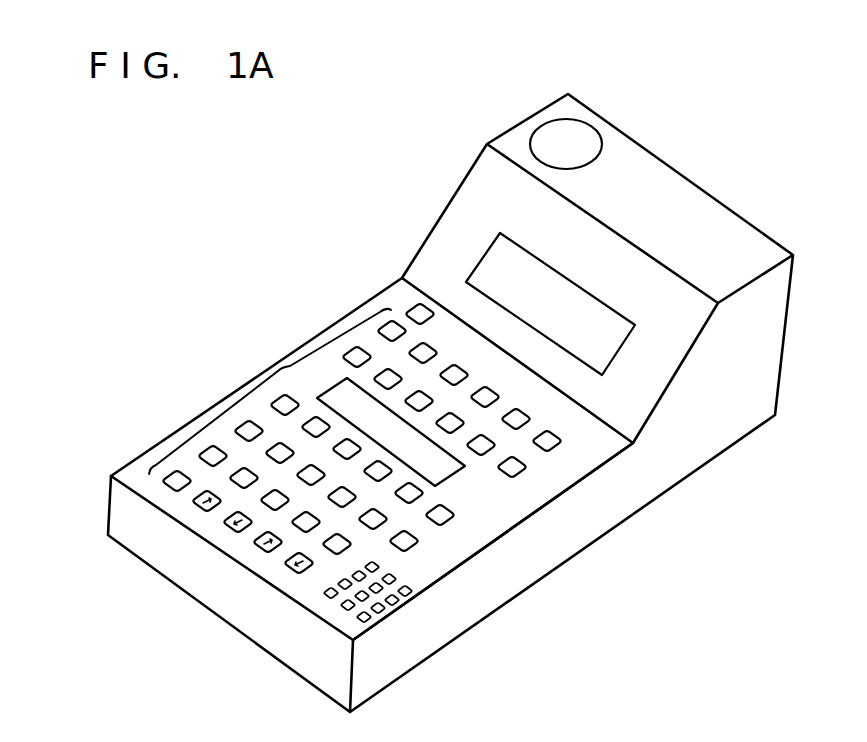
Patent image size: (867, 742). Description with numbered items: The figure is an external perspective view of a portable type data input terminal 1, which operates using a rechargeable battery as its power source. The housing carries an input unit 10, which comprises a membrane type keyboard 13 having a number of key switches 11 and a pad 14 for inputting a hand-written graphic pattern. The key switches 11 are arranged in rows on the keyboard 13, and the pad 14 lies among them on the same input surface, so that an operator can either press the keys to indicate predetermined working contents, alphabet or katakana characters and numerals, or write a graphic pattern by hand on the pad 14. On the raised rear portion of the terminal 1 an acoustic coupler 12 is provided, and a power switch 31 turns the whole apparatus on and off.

The portable type data input terminal 1 is at (154, 373).
The input unit 10 is at (144, 462).
The key switches 11 is at (390, 322).
The acoustic coupler 12 is at (588, 137).
The keyboard 13 is at (270, 360).
The pad 14 is at (448, 472).
The power switch 31 is at (411, 306).